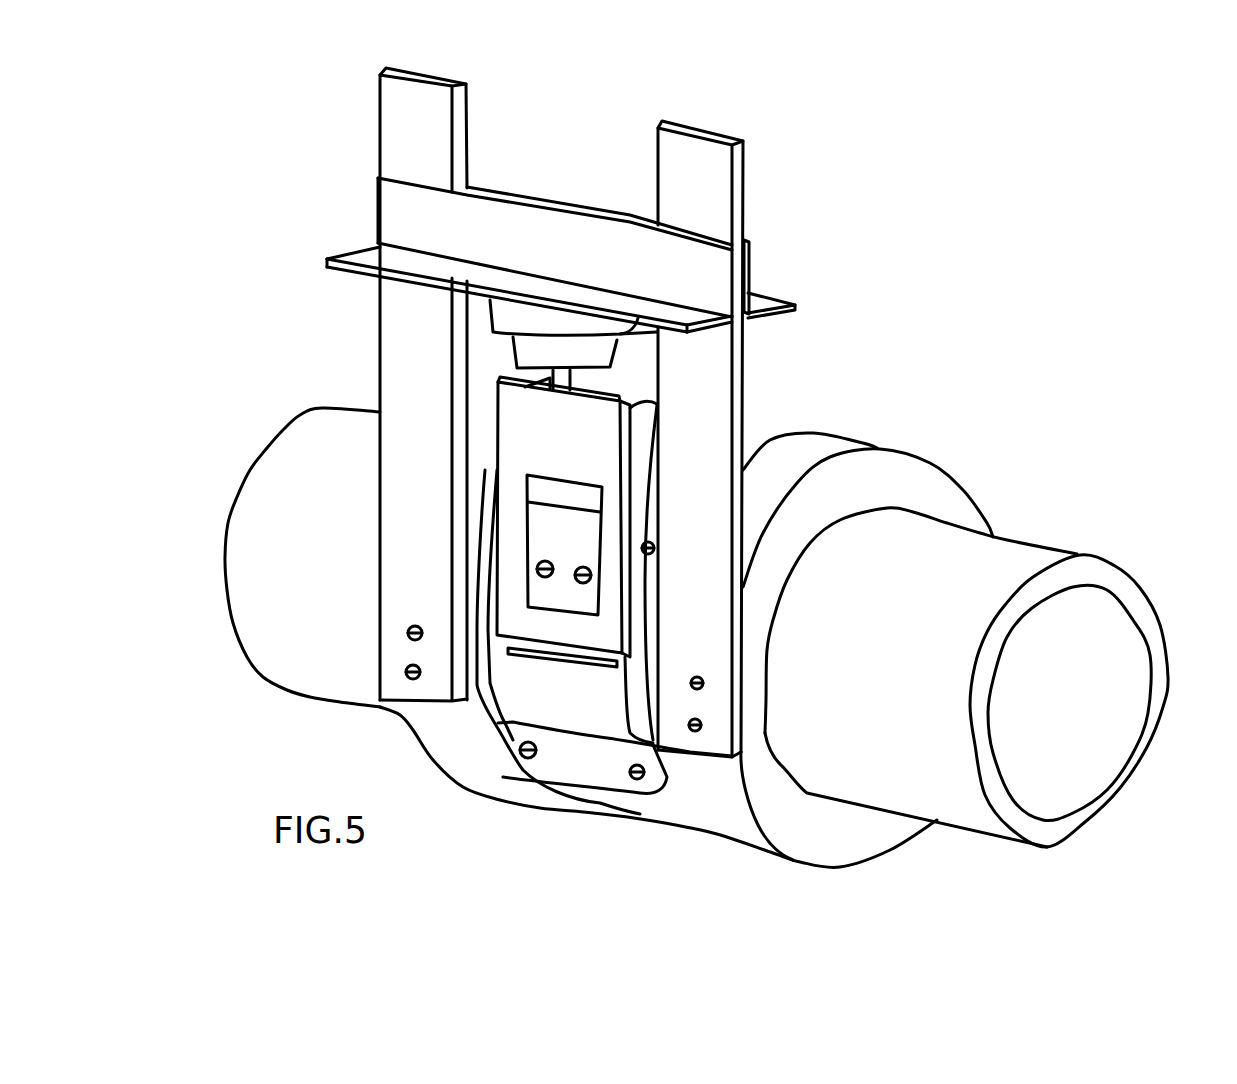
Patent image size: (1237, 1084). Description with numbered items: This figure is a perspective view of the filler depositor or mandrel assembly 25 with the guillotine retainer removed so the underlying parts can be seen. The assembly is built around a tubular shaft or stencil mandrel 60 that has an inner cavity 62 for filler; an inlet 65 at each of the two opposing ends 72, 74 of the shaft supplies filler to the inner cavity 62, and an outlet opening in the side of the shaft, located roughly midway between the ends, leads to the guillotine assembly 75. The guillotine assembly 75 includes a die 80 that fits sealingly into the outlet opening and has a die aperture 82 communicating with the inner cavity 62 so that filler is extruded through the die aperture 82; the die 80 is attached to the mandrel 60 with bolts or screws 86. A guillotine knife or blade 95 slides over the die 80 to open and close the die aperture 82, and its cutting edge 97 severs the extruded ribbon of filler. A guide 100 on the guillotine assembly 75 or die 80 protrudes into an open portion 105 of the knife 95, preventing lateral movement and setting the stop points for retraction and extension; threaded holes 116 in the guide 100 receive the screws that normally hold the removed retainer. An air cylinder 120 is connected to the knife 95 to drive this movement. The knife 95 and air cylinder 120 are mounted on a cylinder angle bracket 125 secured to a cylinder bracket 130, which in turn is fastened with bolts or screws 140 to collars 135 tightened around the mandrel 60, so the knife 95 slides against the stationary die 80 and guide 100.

The filler depositor or mandrel assembly 25 is at (908, 352).
The tubular shaft, cylinder, or stencil mandrel 60 is at (1030, 542).
The inner cavity 62 is at (1063, 687).
The inlet 65 is at (1152, 668).
The opposing end of the tubular shaft 72 is at (267, 447).
The opposing end of the tubular shaft 74 is at (1142, 595).
The guillotine assembly 75 is at (498, 683).
The die 80 is at (497, 752).
The die aperture 82 is at (566, 662).
The bolts or screws 86 is at (655, 542).
The guillotine knife or blade or cutter 95 is at (497, 437).
The cutting edge 97 is at (650, 757).
The guide 100 is at (572, 541).
The open portion 105 is at (570, 486).
The threaded holes 116 is at (535, 568).
The pneumatic device or air cylinder 120 is at (490, 330).
The cylinder angle bracket 125 is at (377, 205).
The cylinder bracket 130 is at (380, 143).
The collars 135 is at (835, 450).
The bolts or screws 140 is at (407, 633).